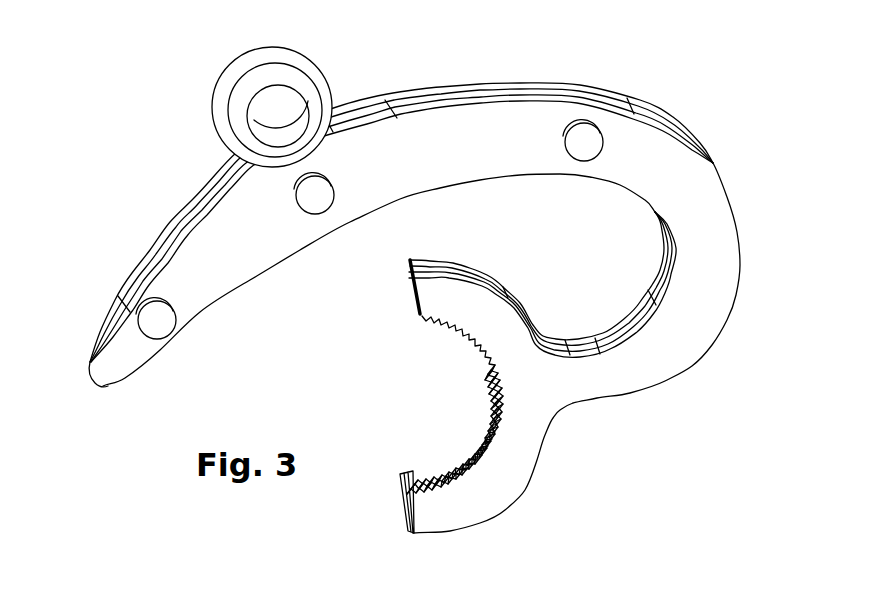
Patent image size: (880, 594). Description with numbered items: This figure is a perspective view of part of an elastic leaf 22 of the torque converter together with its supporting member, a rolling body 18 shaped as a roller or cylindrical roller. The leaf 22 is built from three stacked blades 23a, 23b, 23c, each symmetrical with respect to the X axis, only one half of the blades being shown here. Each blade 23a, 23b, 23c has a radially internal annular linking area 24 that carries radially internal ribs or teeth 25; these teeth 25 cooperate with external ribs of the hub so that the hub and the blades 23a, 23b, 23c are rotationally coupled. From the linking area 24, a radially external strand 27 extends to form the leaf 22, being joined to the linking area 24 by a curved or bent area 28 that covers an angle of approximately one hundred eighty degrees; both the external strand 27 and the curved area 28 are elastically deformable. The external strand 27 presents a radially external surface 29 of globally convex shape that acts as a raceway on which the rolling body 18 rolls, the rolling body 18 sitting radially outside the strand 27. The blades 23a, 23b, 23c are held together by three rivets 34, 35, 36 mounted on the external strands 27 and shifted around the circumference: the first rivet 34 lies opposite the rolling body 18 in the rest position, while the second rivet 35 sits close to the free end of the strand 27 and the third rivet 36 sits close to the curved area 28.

The rolling body 18 is at (248, 66).
The elastic leaf 22 is at (468, 79).
The first blade 23a is at (128, 277).
The second blade 23b is at (100, 333).
The third blade 23c is at (120, 355).
The radially internal annular linking area 24 is at (473, 493).
The radially internal ribs or teeth 25 is at (433, 470).
The radially external strand 27 is at (447, 159).
The curved area 28 is at (713, 240).
The radially external surface (raceway) 29 is at (334, 117).
The first rivet 34 is at (313, 197).
The second rivet 35 is at (163, 323).
The third rivet 36 is at (584, 143).